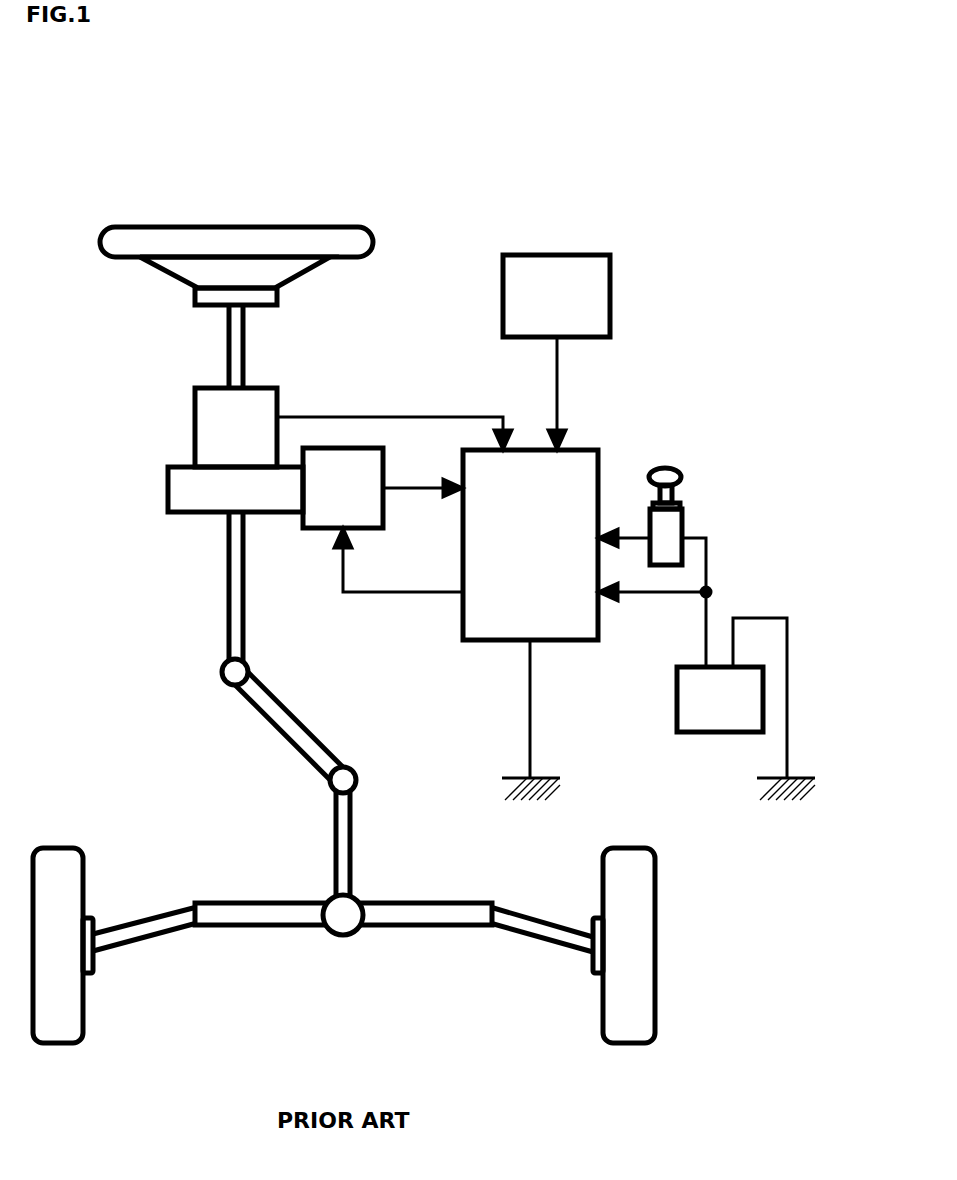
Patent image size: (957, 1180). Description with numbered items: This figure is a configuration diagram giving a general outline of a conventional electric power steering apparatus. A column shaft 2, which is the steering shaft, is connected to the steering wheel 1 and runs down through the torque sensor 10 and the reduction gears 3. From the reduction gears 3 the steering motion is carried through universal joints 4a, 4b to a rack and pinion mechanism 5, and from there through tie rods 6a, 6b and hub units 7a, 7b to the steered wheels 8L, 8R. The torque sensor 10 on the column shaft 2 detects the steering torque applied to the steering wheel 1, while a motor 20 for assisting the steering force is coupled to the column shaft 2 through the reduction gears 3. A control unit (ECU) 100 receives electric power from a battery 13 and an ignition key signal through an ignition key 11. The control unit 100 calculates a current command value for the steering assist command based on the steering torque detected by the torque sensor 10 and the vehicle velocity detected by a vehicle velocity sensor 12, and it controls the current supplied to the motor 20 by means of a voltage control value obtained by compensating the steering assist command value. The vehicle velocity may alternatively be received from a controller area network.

The steering wheel 1 is at (373, 238).
The column shaft 2 is at (227, 352).
The reduction gears 3 is at (168, 497).
The torque sensor 10 is at (195, 420).
The motor 20 is at (385, 455).
The control unit (ECU) 100 is at (600, 455).
The vehicle velocity sensor 12 is at (612, 262).
The ignition key 11 is at (683, 473).
The battery 13 is at (677, 690).
The universal joint 4a is at (222, 677).
The universal joint 4b is at (330, 784).
The rack and pinion mechanism 5 is at (358, 896).
The tie rod 6a is at (127, 925).
The tie rod 6b is at (525, 912).
The hub unit 7a is at (94, 968).
The hub unit 7b is at (592, 968).
The steered wheel 8L is at (83, 1030).
The steered wheel 8R is at (603, 1030).